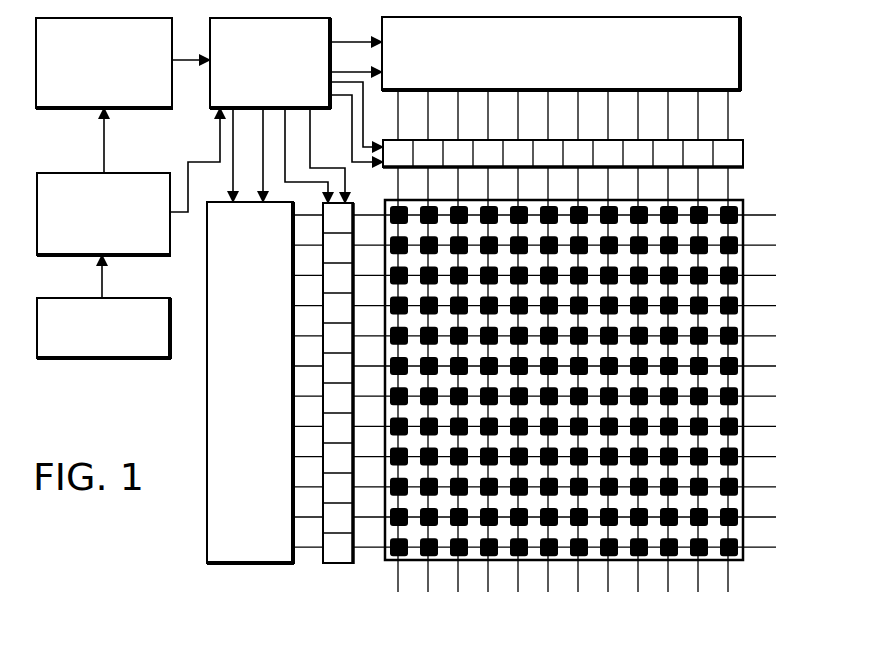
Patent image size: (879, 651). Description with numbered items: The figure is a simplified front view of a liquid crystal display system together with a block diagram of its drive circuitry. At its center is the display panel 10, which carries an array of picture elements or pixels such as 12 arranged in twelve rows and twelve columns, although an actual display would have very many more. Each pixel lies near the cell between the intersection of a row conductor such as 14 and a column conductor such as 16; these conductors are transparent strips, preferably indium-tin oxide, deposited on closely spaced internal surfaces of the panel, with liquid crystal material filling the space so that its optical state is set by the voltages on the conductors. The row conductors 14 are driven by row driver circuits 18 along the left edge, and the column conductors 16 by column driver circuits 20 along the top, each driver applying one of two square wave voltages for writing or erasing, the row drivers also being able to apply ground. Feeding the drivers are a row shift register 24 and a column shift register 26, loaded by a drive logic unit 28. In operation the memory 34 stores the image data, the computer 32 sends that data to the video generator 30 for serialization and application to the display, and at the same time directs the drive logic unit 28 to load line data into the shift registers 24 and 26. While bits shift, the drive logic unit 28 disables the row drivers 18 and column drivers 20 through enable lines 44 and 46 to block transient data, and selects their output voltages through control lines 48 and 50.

The display panel 10 is at (745, 200).
The picture element 12 is at (740, 220).
The row conductor 14 is at (765, 215).
The column conductor 16 is at (728, 287).
The row driver circuit 18 is at (342, 568).
The column driver circuit 20 is at (745, 148).
The row shift register 24 is at (207, 556).
The column shift register 26 is at (740, 50).
The drive logic unit 28 is at (209, 88).
The video generator 30 is at (80, 110).
The computer 32 is at (65, 256).
The memory 34 is at (115, 360).
The enable line 44 is at (331, 133).
The enable line 46 is at (363, 98).
The control line 48 is at (315, 180).
The control line 50 is at (353, 167).